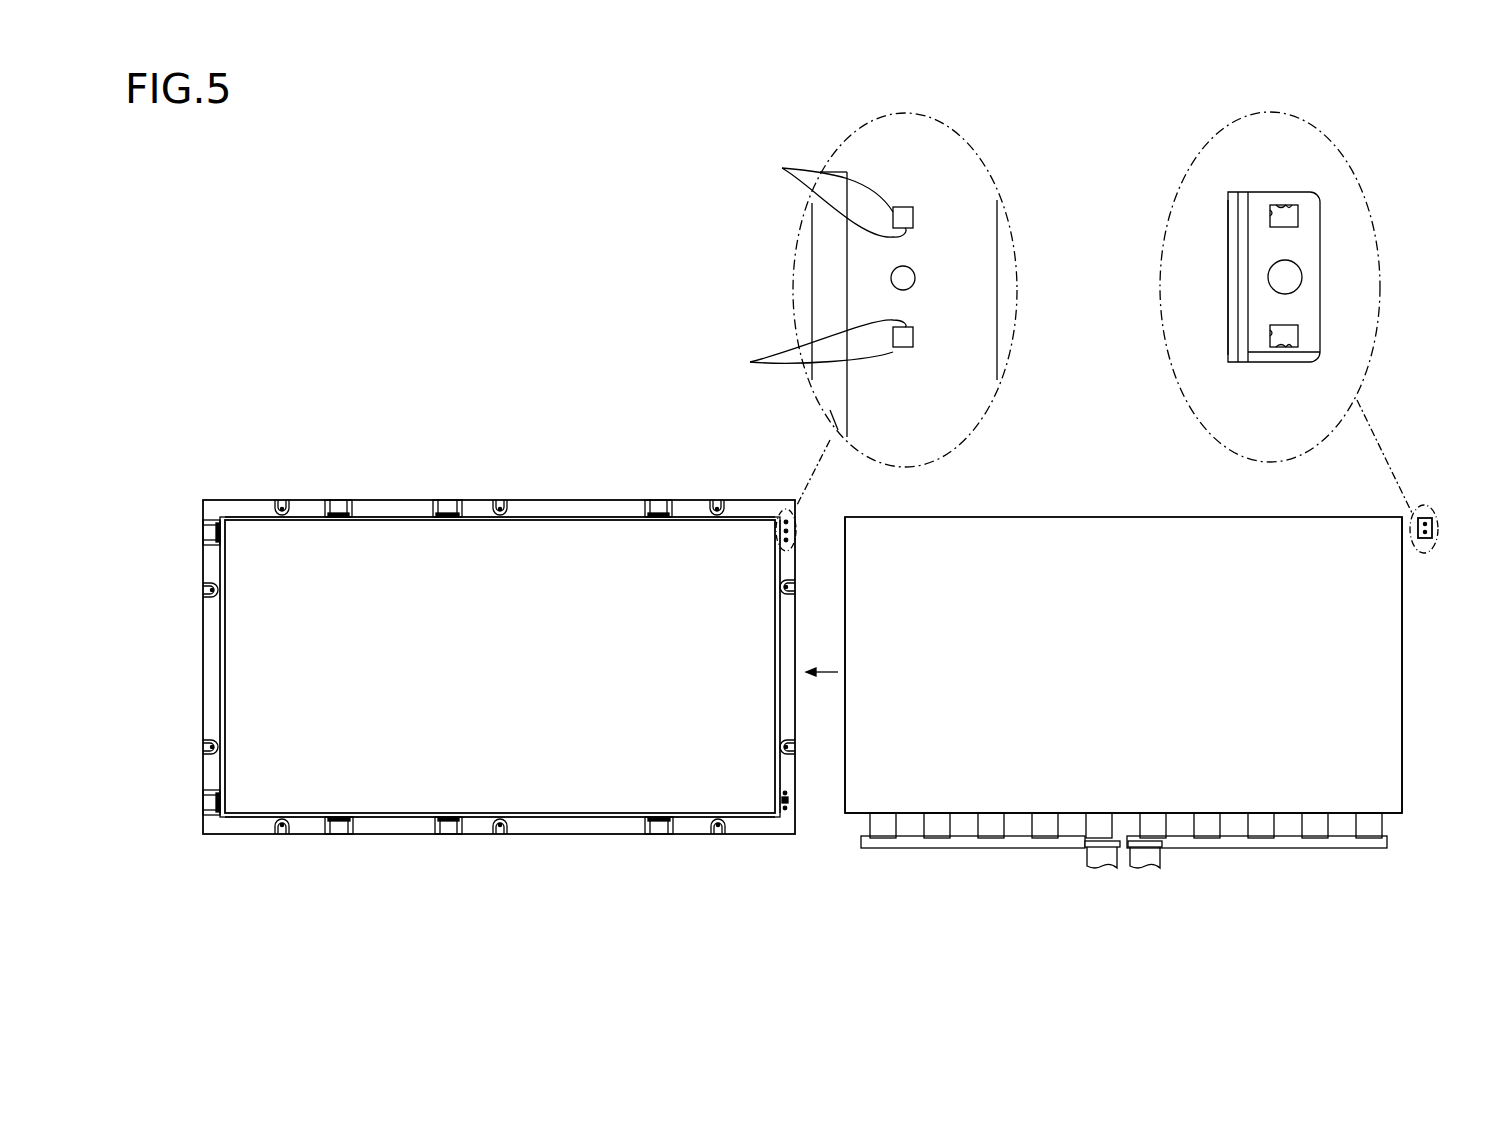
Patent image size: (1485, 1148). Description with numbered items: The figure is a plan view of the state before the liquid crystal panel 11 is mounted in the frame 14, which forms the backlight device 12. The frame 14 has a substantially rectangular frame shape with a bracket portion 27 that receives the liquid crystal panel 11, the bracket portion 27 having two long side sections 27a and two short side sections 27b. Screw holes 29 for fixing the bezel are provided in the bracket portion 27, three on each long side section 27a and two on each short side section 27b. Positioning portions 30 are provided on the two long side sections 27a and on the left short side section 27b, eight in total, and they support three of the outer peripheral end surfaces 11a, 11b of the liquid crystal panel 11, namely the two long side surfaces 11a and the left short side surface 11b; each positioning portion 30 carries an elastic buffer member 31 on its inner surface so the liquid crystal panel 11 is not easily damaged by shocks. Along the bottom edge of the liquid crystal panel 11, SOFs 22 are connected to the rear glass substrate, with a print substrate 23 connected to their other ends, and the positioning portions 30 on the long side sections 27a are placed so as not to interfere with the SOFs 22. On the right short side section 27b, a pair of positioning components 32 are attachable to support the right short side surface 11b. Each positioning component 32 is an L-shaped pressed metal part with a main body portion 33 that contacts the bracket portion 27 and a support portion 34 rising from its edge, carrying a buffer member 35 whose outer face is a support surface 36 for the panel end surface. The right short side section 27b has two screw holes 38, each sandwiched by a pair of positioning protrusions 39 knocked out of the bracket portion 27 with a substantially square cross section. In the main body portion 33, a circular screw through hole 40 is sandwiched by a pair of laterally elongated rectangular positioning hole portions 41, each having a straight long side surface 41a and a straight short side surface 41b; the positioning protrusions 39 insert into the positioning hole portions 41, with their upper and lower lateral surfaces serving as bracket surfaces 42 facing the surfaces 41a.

The liquid crystal panel 11 is at (950, 530).
The outer peripheral end surface on long side 11a is at (1077, 517).
The outer peripheral end surface on short side 11b is at (1404, 660).
The backlight device 12 is at (213, 486).
The frame 14 is at (243, 500).
The SOF 22 is at (995, 832).
The print substrate 23 is at (1068, 846).
The bracket portion 27 is at (233, 834).
The long side section 27a is at (572, 503).
The short side section 27b is at (212, 656).
The screw hole 29 is at (500, 508).
The positioning portion 30 is at (340, 515).
The buffer member 31 is at (662, 522).
The positioning component 32 is at (1322, 282).
The main body portion 33 is at (1253, 195).
The support portion 34 is at (1248, 352).
The buffer member 35 is at (1232, 212).
The support surface 36 is at (1230, 265).
The screw hole 38 is at (782, 800).
The positioning protrusion 39 is at (784, 800).
The screw through hole 40 is at (1288, 270).
The positioning hole portion 41 is at (1296, 214).
The long side surface of positioning hole portion 41a is at (1282, 212).
The short side surface of positioning hole portion 41b is at (1272, 222).
The bracket surface 42 is at (1028, 380).